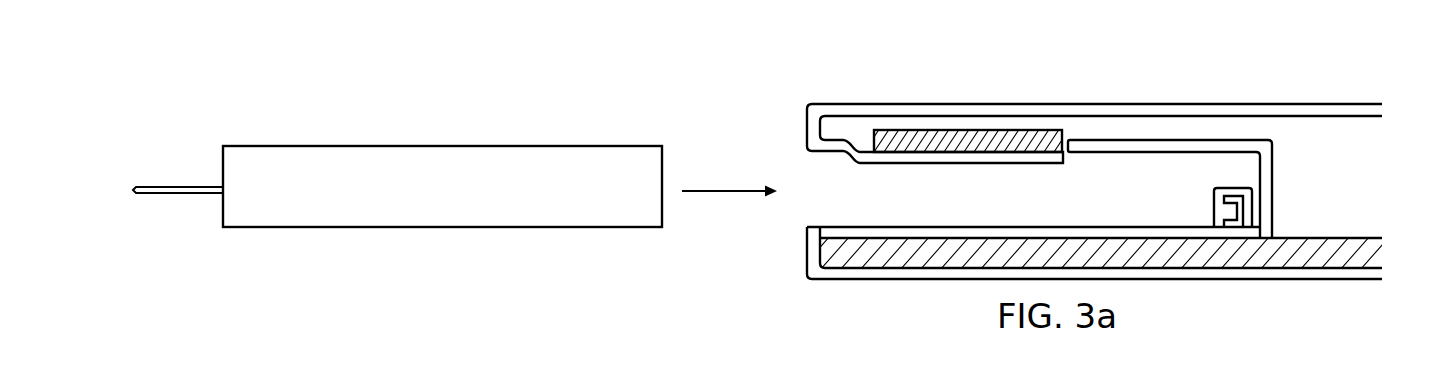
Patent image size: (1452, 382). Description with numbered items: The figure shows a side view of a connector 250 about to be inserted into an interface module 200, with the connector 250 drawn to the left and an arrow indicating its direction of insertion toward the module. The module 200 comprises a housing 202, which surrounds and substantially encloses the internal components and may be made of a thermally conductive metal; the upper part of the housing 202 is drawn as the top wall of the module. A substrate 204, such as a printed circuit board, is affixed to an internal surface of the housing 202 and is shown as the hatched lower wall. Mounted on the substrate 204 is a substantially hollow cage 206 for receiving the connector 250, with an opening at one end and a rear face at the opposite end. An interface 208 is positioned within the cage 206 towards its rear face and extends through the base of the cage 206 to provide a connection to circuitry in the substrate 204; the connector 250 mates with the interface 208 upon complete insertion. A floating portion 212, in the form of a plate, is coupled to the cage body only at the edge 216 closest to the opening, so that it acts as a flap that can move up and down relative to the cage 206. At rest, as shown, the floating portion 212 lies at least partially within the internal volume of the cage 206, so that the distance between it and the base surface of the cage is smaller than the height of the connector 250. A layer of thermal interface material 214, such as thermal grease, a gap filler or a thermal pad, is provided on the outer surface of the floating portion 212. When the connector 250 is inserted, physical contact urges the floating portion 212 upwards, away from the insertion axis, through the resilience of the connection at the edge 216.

The connector 250 is at (505, 146).
The interface module 200 is at (952, 74).
The housing 202 is at (1363, 104).
The substrate 204 is at (1360, 238).
The cage 206 is at (1273, 188).
The interface 208 is at (1232, 220).
The floating portion 212 is at (1032, 161).
The thermal interface material 214 is at (1000, 138).
The edge 216 is at (852, 148).